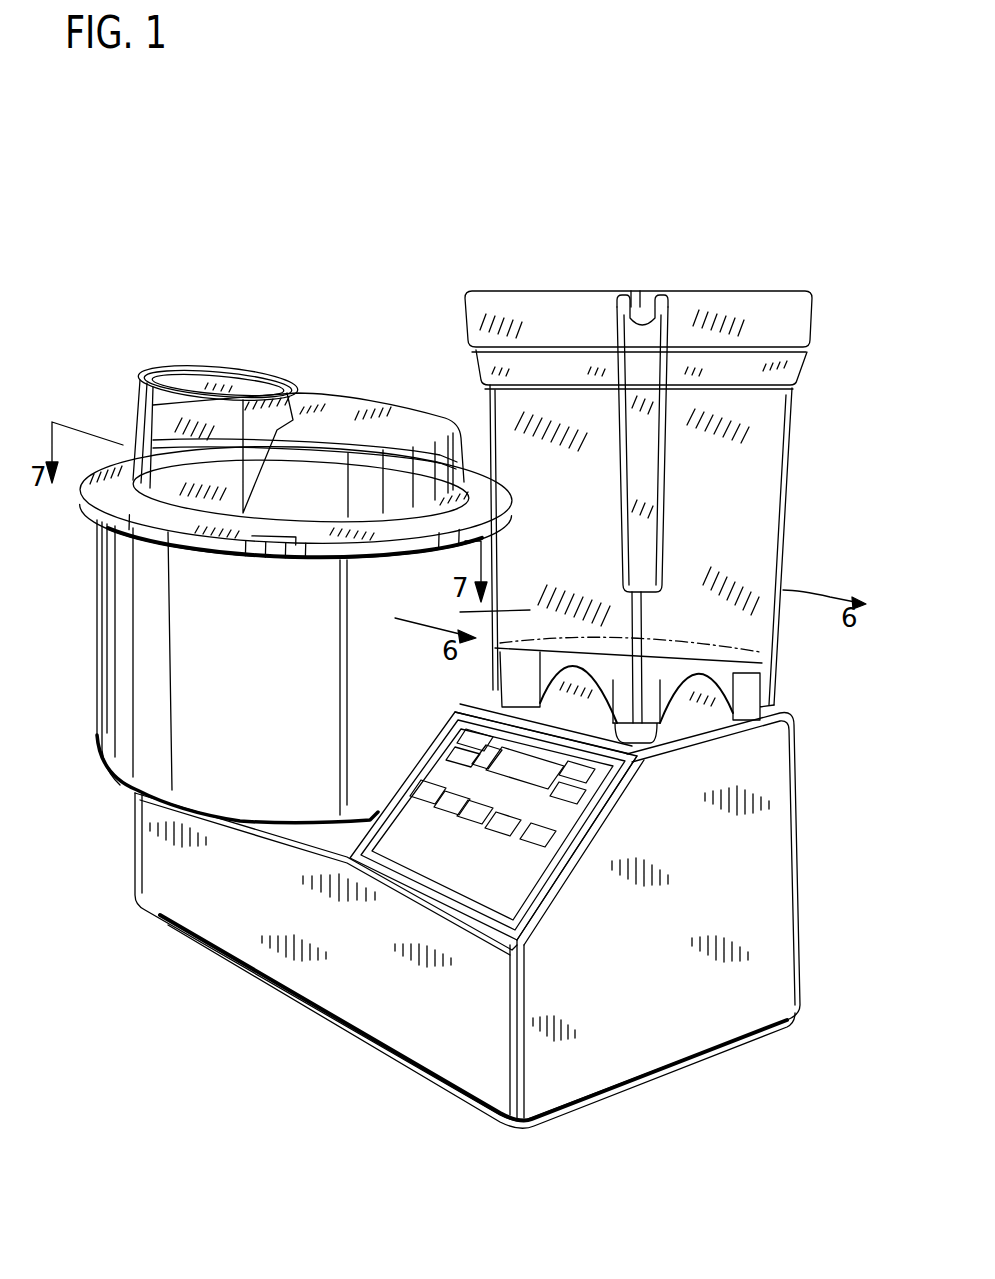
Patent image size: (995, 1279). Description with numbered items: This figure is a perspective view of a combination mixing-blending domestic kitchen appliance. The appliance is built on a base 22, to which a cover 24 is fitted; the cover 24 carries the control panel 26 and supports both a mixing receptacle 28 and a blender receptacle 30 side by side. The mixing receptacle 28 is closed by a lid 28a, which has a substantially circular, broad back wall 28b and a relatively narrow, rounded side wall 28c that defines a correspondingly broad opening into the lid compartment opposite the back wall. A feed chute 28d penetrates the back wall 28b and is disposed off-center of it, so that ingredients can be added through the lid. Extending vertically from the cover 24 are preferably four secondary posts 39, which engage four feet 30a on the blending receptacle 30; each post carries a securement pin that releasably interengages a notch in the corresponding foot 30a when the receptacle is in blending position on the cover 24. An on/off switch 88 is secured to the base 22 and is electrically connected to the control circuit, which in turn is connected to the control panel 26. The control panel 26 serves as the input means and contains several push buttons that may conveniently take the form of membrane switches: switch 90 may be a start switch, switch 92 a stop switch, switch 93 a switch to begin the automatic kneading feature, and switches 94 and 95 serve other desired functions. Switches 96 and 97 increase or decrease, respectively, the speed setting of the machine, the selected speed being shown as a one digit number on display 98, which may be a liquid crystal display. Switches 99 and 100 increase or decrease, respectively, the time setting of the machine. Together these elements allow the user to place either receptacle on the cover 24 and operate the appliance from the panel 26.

The base 22 is at (623, 1087).
The cover 24 is at (430, 1052).
The control panel 26 is at (570, 820).
The mixing receptacle 28 is at (110, 680).
The lid 28a is at (389, 388).
The back wall 28b is at (403, 430).
The side wall 28c is at (333, 490).
The feed chute 28d is at (140, 397).
The blender receptacle 30 is at (783, 483).
The feet 30a is at (660, 712).
The secondary posts 39 is at (733, 722).
The on/off switch 88 is at (463, 1100).
The start switch 90 is at (432, 810).
The stop switch 92 is at (532, 853).
The automatic kneading switch 93 is at (493, 830).
The function switch 94 is at (470, 827).
The function switch 95 is at (443, 805).
The speed increase switch 96 is at (460, 737).
The speed decrease switch 97 is at (455, 757).
The speed display 98 is at (470, 738).
The time increase switch 99 is at (600, 770).
The time decrease switch 100 is at (585, 798).